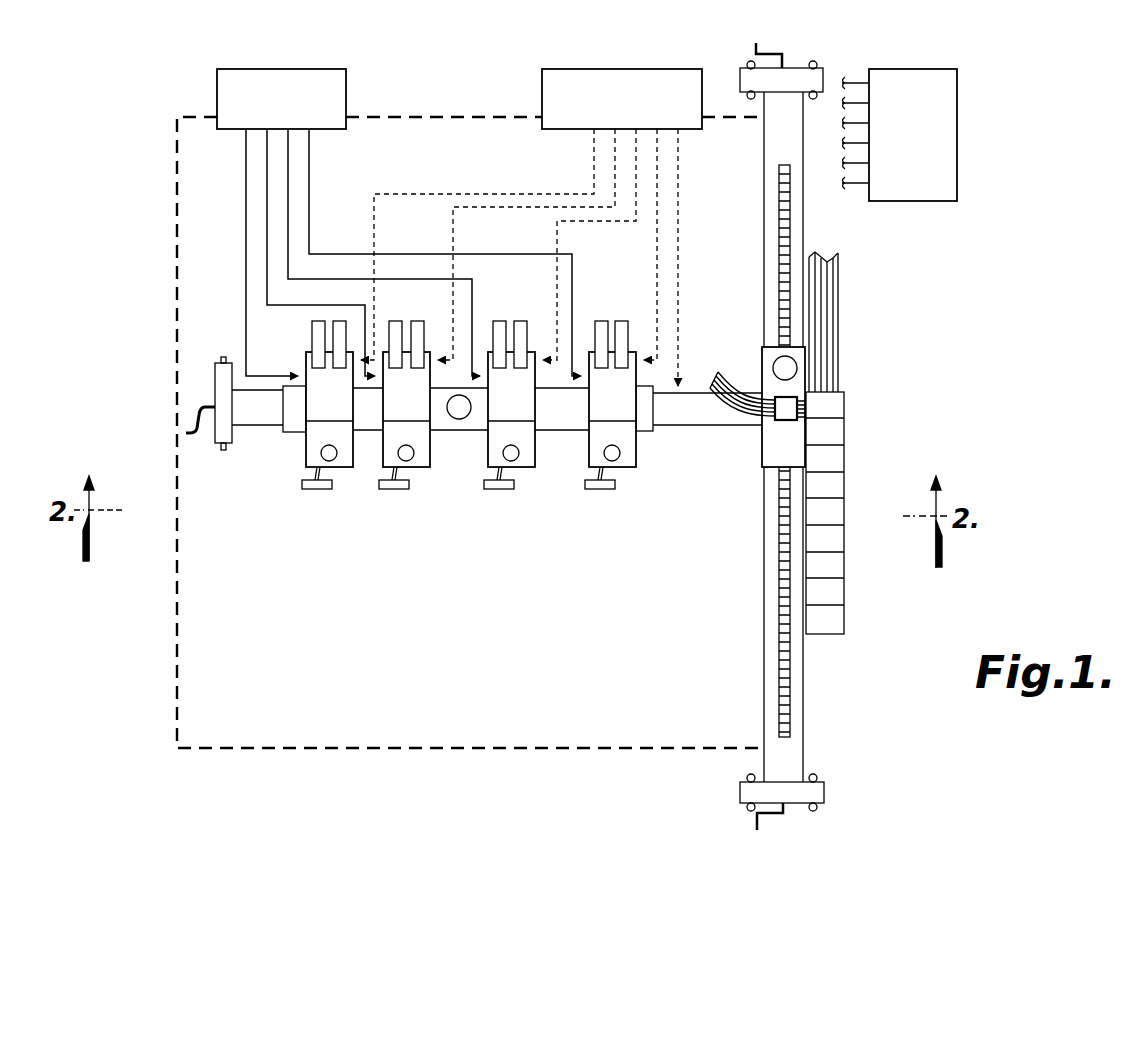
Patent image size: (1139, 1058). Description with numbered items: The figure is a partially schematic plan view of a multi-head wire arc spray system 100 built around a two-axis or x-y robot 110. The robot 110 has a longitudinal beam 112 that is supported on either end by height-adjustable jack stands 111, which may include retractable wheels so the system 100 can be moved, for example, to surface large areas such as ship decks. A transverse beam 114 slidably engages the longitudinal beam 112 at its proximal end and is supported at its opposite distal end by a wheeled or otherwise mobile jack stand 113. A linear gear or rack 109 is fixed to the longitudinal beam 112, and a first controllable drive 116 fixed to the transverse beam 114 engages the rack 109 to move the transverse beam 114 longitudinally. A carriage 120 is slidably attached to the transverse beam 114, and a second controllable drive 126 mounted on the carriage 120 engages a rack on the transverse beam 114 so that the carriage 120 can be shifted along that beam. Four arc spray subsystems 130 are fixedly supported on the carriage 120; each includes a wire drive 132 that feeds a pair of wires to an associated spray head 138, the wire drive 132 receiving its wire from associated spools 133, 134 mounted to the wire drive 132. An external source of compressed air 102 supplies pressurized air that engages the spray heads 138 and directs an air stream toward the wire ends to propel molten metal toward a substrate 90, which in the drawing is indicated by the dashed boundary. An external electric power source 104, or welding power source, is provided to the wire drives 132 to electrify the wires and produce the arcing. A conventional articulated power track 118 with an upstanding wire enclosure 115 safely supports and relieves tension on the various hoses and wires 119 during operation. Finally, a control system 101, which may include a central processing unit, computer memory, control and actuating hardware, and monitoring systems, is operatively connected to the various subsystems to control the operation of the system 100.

The multi-head wire arc spray system 100 is at (106, 118).
The substrate 90 is at (178, 605).
The control system 101 is at (957, 76).
The source of compressed air 102 is at (542, 84).
The electric power source 104 is at (217, 80).
The rack 109 is at (790, 657).
The two-axis robot 110 is at (800, 435).
The jack stands 111 is at (823, 72).
The longitudinal beam 112 is at (803, 703).
The mobile jack stand 113 is at (217, 443).
The transverse beam 114 is at (683, 420).
The upstanding wire enclosure 115 is at (782, 421).
The first controllable drive 116 is at (775, 368).
The articulated power track 118 is at (850, 444).
The hoses and wires 119 is at (846, 337).
The carriage 120 is at (562, 417).
The second controllable drive 126 is at (459, 419).
The arc spray subsystems 130 is at (348, 472).
The wire drive 132 is at (625, 406).
The wire spool 133 is at (340, 321).
The wire spool 134 is at (315, 338).
The spray head 138 is at (302, 484).